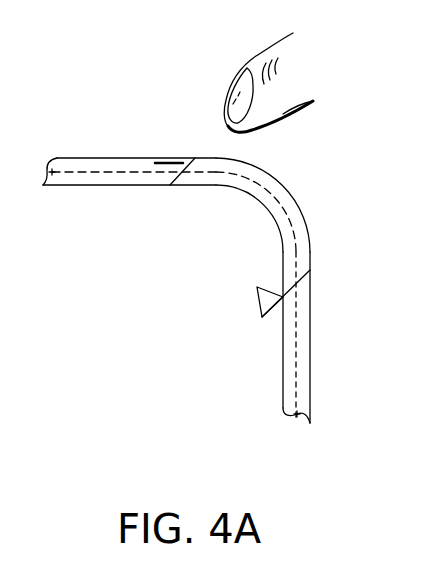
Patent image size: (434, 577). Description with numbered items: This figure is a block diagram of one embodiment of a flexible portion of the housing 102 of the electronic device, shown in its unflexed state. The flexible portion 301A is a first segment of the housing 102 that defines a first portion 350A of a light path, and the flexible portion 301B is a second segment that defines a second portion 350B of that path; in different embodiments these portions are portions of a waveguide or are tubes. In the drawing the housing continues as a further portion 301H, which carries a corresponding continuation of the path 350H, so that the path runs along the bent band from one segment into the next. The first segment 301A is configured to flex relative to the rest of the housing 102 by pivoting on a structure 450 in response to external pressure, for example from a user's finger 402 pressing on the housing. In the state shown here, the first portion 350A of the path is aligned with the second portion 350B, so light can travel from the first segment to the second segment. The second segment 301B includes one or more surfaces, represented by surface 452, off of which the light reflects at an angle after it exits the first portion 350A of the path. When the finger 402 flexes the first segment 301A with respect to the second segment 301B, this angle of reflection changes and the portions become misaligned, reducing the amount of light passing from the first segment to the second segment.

The housing 102 is at (229, 269).
The flexible portion 301A is at (290, 200).
The flexible portion 301B is at (170, 157).
The band side portion 301H is at (281, 343).
The first portion of the path 350A is at (292, 258).
The second portion of the path 350B is at (122, 175).
The sensor layer in side portion 350H is at (300, 372).
The user's finger 402 is at (255, 53).
The structure 450 is at (258, 299).
The surface 452 is at (175, 159).